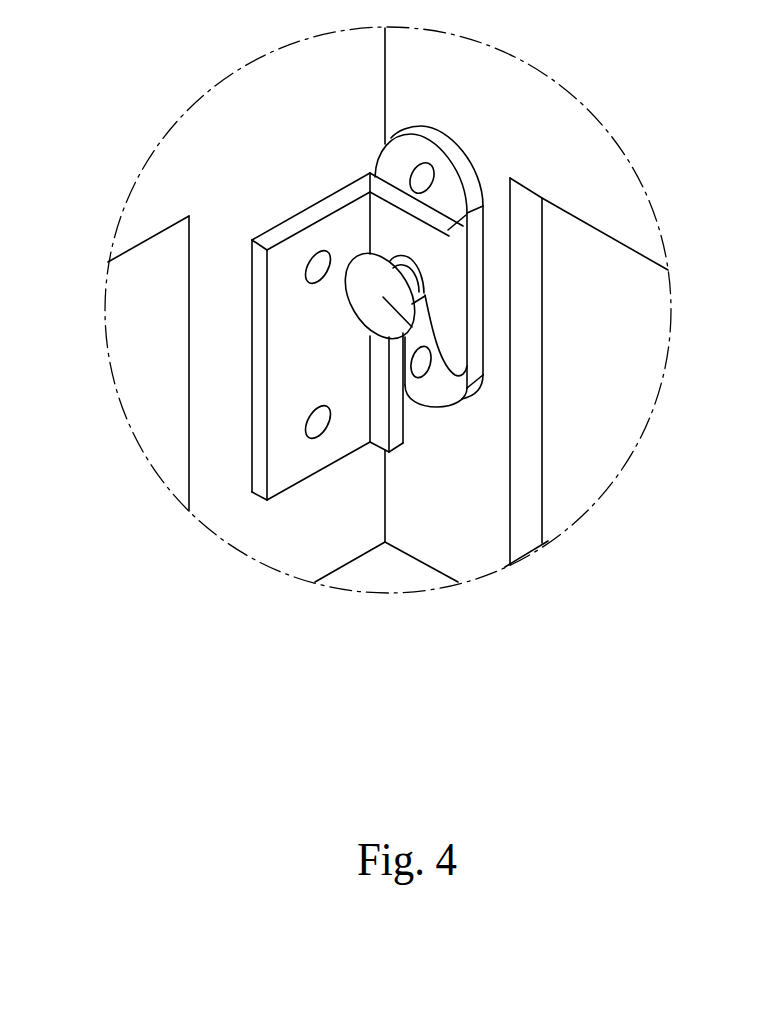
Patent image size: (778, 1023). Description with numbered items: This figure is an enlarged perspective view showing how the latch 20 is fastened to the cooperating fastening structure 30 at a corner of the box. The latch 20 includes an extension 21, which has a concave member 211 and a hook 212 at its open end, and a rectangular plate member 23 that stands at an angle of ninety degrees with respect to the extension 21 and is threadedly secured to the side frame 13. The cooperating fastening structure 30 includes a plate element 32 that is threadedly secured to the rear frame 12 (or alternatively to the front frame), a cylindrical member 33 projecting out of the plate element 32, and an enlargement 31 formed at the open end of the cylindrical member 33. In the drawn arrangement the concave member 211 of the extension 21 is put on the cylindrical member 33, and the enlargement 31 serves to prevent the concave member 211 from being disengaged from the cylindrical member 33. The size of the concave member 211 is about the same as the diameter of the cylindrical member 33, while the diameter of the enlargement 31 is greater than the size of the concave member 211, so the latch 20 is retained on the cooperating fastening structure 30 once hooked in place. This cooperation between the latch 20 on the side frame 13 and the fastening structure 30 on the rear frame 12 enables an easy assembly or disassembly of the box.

The rear frame 12 is at (485, 483).
The side frame 13 is at (207, 440).
The latch 20 is at (350, 177).
The extension 21 is at (297, 137).
The concave member 211 is at (414, 258).
The hook 212 is at (279, 328).
The rectangular plate member 23 is at (297, 367).
The cooperating fastening structure 30 is at (432, 125).
The enlargement 31 is at (400, 337).
The plate element 32 is at (447, 190).
The cylindrical member 33 is at (418, 283).